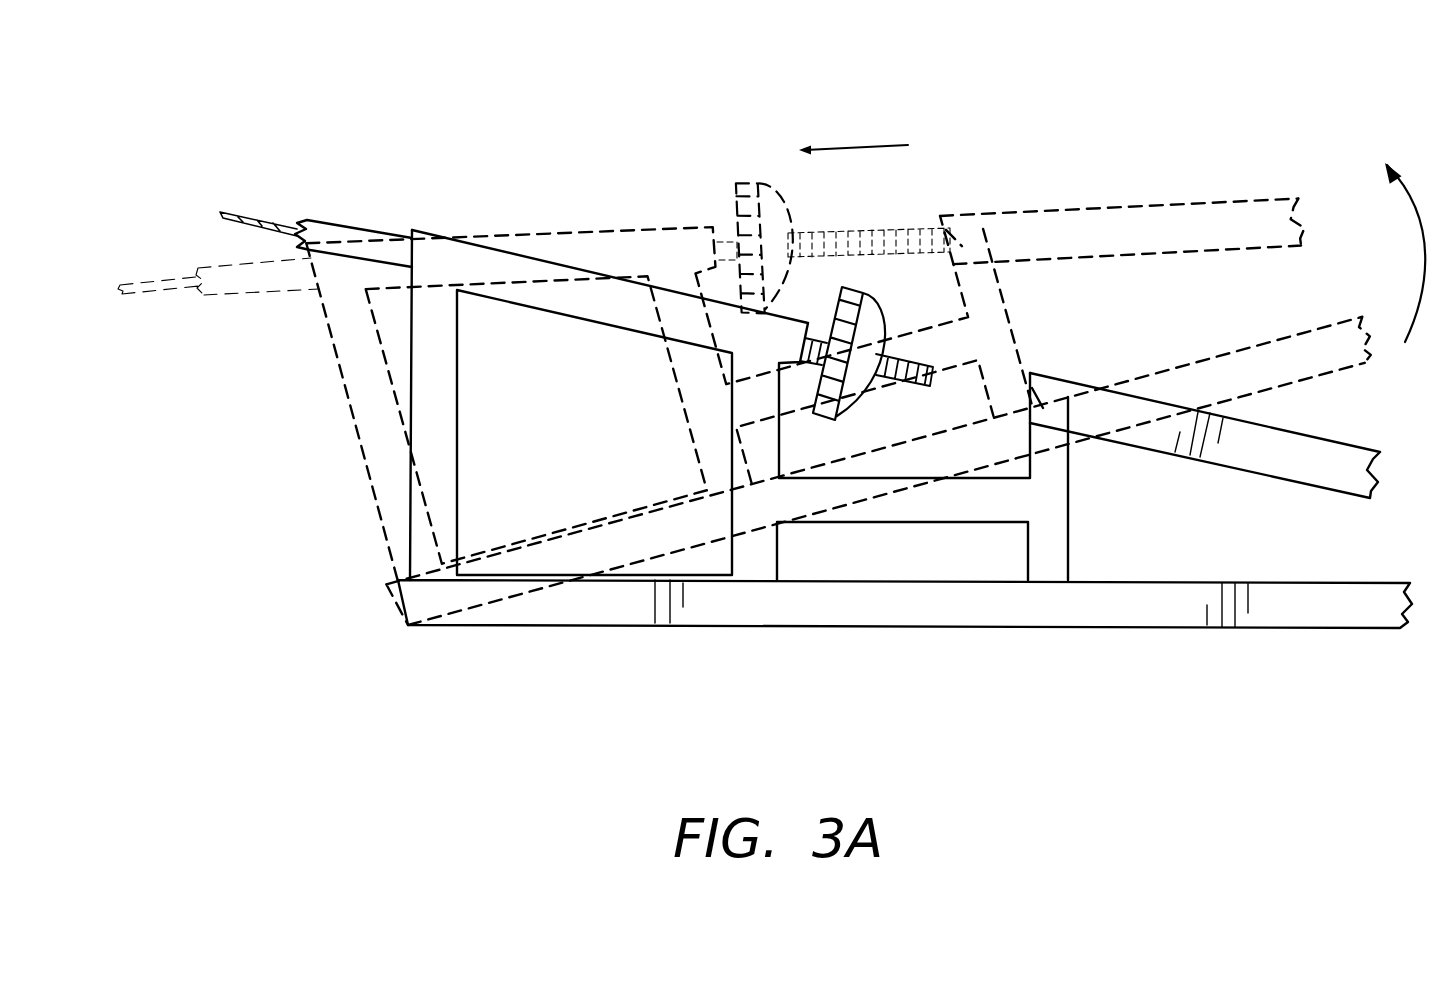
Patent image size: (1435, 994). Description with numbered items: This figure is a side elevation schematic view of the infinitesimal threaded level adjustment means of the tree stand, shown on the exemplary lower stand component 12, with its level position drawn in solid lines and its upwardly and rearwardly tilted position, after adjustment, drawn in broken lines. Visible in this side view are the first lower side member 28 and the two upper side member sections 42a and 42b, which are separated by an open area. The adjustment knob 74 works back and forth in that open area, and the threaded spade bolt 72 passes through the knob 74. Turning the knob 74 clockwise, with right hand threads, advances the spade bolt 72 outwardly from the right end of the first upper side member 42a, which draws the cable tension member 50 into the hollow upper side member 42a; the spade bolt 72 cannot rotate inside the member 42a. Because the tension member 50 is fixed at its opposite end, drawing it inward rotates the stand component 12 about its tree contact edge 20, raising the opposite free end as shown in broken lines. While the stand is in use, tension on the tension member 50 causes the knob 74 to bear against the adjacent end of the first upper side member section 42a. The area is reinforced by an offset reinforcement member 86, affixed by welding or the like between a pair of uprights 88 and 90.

The lower stand component 12 is at (1103, 180).
The tree contact edge 20 is at (403, 618).
The first lower side member 28 is at (642, 573).
The first upper side member section 42a is at (615, 272).
The second upper side member section 42b is at (1148, 400).
The tension member 50 is at (303, 206).
The spade bolt 72 is at (895, 362).
The adjustment knob 74 is at (833, 317).
The offset reinforcement member 86 is at (1002, 476).
The upright 88 is at (730, 452).
The upright 90 is at (1053, 463).